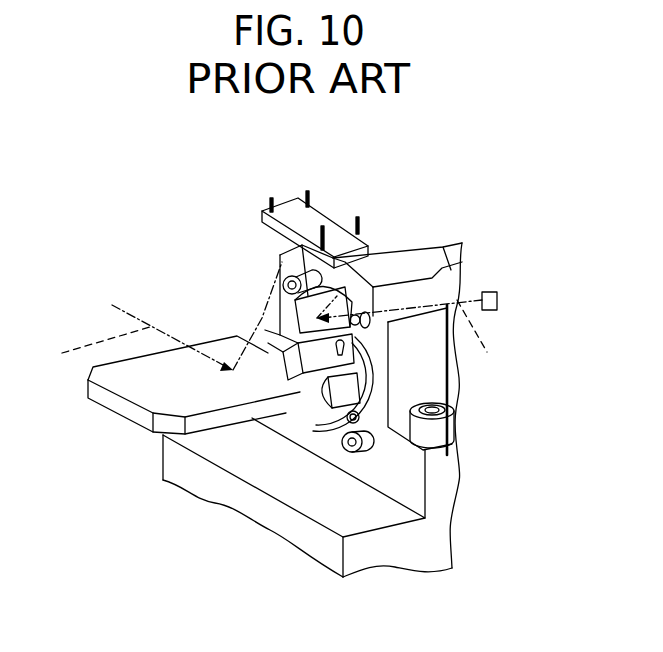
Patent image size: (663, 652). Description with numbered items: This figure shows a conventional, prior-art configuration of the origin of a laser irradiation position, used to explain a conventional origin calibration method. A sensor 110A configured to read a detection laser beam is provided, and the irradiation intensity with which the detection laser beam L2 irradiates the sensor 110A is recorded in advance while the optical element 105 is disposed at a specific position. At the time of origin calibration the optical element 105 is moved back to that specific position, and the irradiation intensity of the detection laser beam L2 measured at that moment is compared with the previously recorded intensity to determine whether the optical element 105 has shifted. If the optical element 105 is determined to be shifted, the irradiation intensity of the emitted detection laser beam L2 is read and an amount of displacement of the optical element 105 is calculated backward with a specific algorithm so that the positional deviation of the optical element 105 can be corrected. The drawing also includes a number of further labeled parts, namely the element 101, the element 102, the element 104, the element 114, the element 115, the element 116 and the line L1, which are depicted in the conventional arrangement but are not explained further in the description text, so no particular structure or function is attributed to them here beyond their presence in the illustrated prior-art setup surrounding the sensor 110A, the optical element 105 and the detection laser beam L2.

The base 101 is at (192, 526).
The support column 102 is at (440, 391).
The slide unit 104 is at (311, 364).
The optical element 105 is at (219, 436).
The sensor 110A is at (550, 231).
The spindle housing 114 is at (332, 307).
The tool 115 is at (487, 292).
The workpiece holding plate 116 is at (372, 253).
The axis L1 is at (410, 336).
The detection laser beam L2 is at (157, 316).